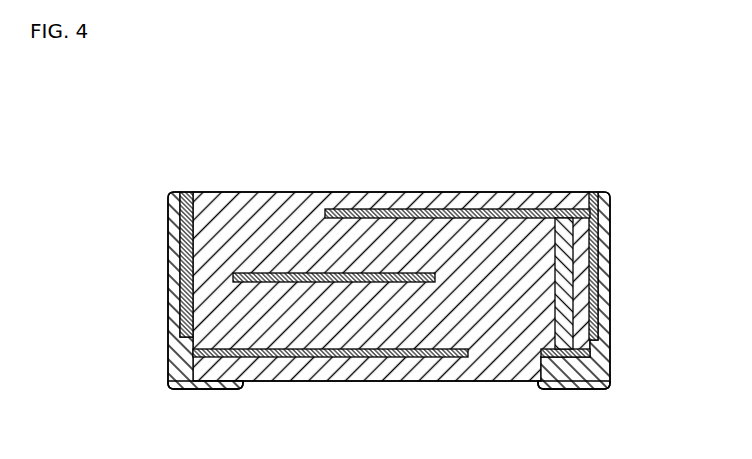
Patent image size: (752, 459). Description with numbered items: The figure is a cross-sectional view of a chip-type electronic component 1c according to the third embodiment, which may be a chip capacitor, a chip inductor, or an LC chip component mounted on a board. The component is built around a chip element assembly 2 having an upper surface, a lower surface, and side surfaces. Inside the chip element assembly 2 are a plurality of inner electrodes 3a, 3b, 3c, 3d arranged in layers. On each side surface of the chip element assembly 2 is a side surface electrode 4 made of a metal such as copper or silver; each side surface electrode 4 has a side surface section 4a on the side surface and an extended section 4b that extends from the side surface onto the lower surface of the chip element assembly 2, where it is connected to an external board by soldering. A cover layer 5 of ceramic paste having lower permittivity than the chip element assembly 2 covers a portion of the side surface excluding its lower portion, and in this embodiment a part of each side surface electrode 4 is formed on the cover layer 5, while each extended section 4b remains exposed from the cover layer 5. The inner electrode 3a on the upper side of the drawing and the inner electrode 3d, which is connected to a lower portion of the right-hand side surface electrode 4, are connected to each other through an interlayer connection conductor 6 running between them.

The chip-type electronic component 1c is at (385, 268).
The chip element assembly 2 is at (432, 362).
The inner electrode 3a is at (437, 212).
The inner electrode 3b is at (263, 276).
The inner electrode 3c is at (345, 358).
The inner electrode 3d is at (548, 357).
The side surface electrode 4 is at (146, 371).
The side surface section 4a is at (182, 265).
The extended section 4b is at (204, 389).
The cover layer 5 is at (583, 192).
The interlayer connection conductor 6 is at (562, 276).